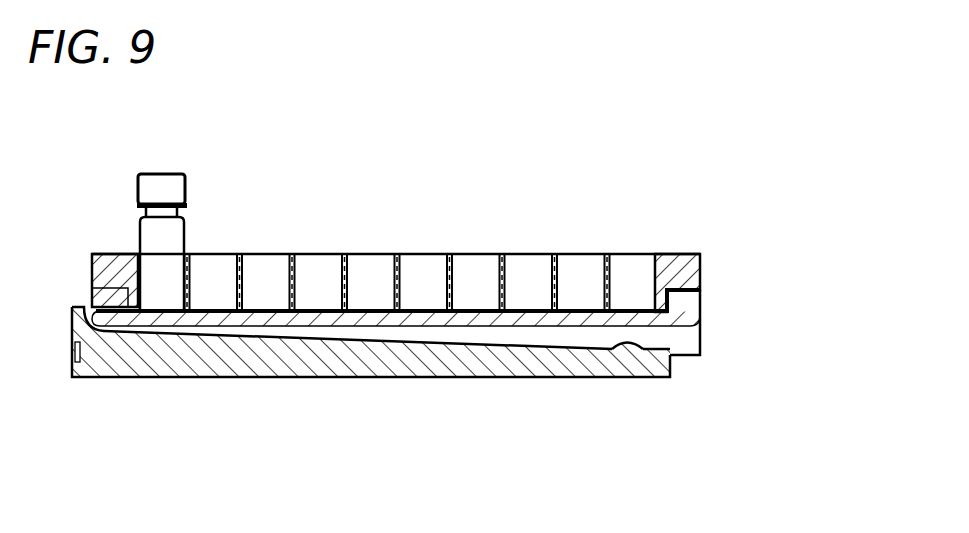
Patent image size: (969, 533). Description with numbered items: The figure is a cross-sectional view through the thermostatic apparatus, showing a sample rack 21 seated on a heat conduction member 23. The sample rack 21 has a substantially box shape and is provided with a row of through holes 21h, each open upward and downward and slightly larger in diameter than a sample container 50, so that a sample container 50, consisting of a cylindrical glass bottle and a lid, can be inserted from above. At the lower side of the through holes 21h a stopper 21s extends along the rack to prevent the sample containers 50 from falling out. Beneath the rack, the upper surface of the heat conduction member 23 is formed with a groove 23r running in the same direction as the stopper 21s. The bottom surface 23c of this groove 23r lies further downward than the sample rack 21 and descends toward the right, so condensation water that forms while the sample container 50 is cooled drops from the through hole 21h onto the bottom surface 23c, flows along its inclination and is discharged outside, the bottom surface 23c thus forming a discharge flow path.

The sample rack 21 is at (450, 227).
The through hole 21h is at (375, 262).
The stopper 21s is at (678, 308).
The heat conduction member 23 is at (451, 418).
The bottom surface 23c is at (647, 350).
The groove 23r is at (688, 338).
The sample container 50 is at (183, 194).